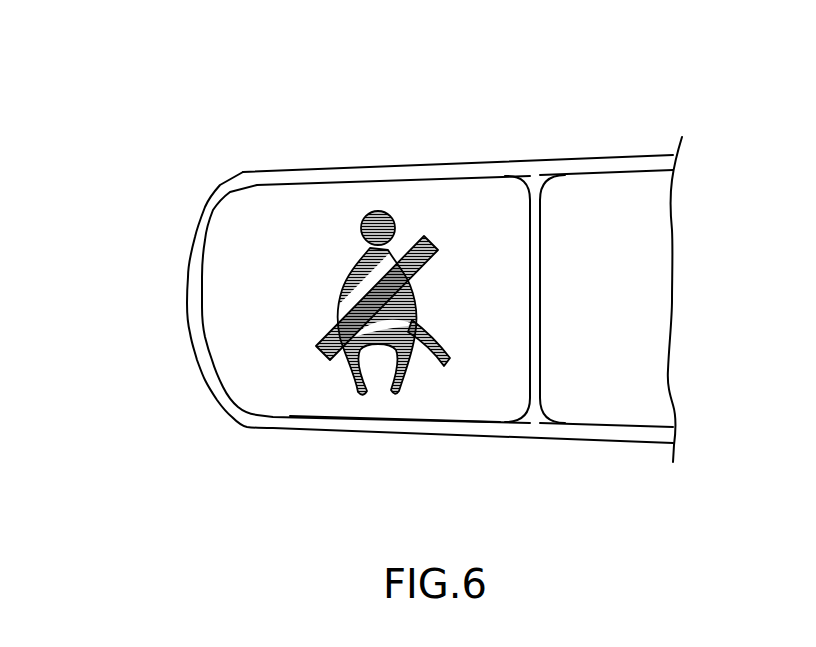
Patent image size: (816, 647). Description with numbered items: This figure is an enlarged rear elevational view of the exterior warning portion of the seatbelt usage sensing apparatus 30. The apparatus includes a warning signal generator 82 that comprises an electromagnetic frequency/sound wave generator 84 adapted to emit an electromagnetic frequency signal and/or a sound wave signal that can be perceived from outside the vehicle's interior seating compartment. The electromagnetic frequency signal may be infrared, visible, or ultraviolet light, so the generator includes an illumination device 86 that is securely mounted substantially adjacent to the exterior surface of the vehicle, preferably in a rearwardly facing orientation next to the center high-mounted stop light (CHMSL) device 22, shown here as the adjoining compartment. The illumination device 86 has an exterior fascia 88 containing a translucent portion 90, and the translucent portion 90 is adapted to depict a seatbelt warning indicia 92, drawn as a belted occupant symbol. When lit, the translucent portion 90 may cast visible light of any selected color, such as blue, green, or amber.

The center high-mounted stop light (CHMSL) device 22 is at (610, 198).
The seatbelt usage sensing apparatus 30 is at (186, 387).
The warning signal generator 82 is at (189, 133).
The electromagnetic frequency/sound wave generator 84 is at (415, 156).
The illumination device 86 is at (297, 212).
The exterior fascia 88 is at (268, 278).
The translucent portion 90 is at (303, 385).
The seatbelt warning indicia 92 is at (385, 399).